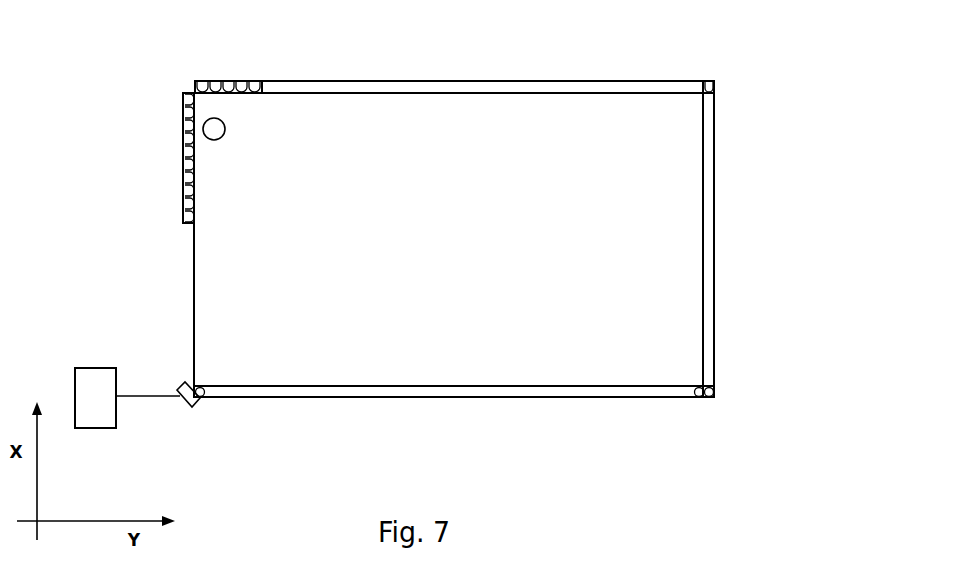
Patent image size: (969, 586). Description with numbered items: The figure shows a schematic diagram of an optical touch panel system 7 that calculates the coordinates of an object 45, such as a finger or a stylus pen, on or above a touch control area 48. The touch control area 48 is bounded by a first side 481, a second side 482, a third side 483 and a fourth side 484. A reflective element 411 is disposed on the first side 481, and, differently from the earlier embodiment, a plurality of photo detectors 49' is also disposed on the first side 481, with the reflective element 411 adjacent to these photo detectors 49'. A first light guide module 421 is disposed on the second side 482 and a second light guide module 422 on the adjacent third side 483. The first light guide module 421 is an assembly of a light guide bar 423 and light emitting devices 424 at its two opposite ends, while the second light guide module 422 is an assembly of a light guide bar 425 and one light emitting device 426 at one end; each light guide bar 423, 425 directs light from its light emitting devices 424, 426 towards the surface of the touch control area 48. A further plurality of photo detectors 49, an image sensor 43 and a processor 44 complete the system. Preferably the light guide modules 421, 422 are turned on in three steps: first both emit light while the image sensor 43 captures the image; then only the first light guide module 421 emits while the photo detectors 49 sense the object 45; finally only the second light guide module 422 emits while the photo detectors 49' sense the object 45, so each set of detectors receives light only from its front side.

The optical touch panel system 7 is at (730, 44).
The image sensor 43 is at (185, 405).
The processor 44 is at (98, 368).
The object 45 is at (203, 130).
The touch control area 48 is at (444, 252).
The photo detectors 49 is at (137, 158).
The photo detectors 49' is at (229, 49).
The reflective element 411 is at (468, 87).
The first light guide module 421 is at (792, 354).
The second light guide module 422 is at (669, 468).
The light guide bar 423 is at (708, 322).
The light emitting device 424 is at (714, 394).
The light guide bar 425 is at (643, 397).
The light emitting device 426 is at (699, 397).
The first side 481 is at (362, 93).
The second side 482 is at (704, 190).
The third side 483 is at (342, 387).
The left frame bar 484 is at (194, 273).